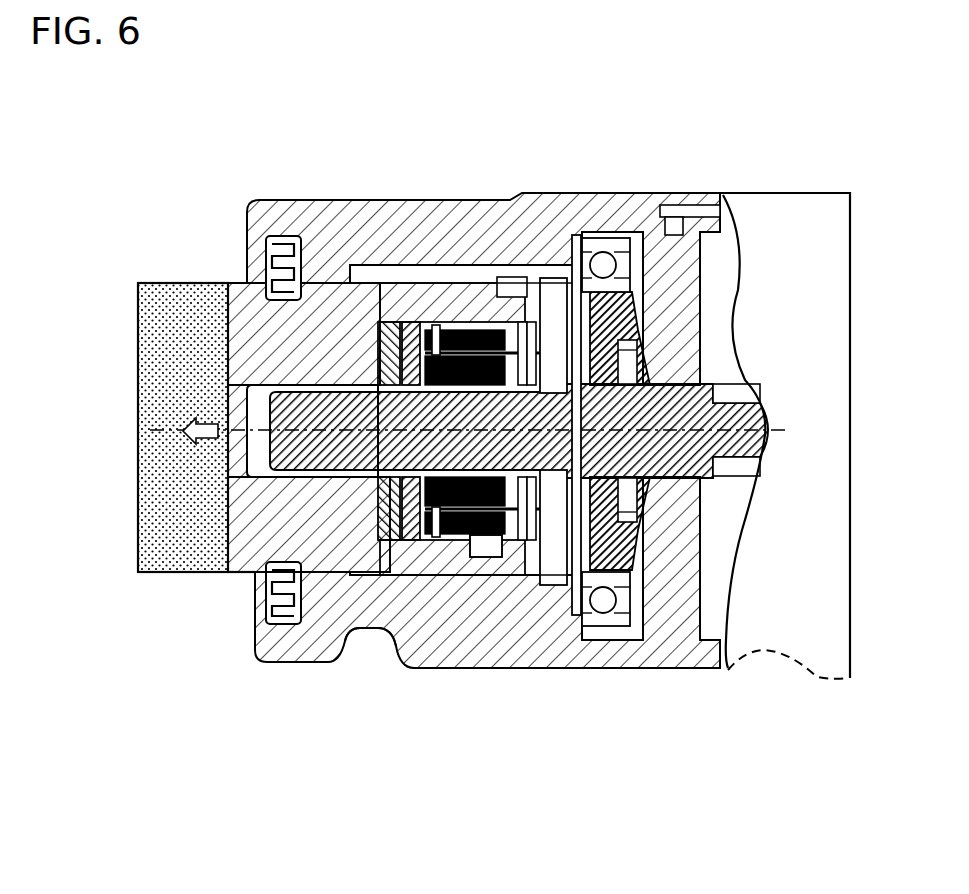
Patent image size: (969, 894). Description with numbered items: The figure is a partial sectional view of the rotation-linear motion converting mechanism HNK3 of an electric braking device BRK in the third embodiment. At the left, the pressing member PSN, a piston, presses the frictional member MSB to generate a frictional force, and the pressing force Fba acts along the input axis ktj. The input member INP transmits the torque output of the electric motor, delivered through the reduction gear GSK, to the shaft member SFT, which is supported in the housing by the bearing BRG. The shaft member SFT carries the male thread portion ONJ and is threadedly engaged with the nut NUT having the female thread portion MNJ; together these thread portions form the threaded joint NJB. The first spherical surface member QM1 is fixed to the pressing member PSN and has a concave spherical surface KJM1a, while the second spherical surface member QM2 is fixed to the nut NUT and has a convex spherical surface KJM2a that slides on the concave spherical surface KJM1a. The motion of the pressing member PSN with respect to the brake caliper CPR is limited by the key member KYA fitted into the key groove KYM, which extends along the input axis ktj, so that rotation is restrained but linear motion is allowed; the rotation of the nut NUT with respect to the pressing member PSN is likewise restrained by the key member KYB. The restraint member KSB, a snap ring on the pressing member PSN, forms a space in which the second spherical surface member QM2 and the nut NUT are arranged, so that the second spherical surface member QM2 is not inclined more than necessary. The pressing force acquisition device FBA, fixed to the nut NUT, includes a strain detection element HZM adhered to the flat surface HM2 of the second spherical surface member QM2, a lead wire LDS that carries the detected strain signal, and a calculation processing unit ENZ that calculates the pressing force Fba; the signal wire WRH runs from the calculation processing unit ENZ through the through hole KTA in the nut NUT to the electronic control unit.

The brake BRK is at (186, 176).
The rotation-linear motion converting mechanism HNK3 is at (456, 140).
The pressing member PSN is at (255, 308).
The frictional member MSB is at (178, 305).
The shaft member SFT is at (333, 405).
The first spherical surface member QM1 is at (390, 330).
The second spherical surface member QM2 is at (416, 328).
The flat surface HM2 is at (412, 320).
The through hole KTA is at (478, 318).
The key member KYA is at (517, 292).
The key member KYB is at (506, 565).
The brake caliper CPR is at (540, 320).
The signal wire WRH is at (572, 300).
The nut assembly NJB is at (862, 133).
The female thread portion MNJ is at (645, 383).
The male thread portion ONJ is at (655, 392).
The input member INP is at (733, 407).
The input axis ktj is at (784, 446).
The pressing force Fba is at (188, 427).
The concave spherical surface KJM1a is at (205, 569).
The convex spherical surface KJM2a is at (240, 570).
The strain detection element HZM is at (300, 624).
The lead wire LDS is at (352, 628).
The pressing force acquisition device FBA is at (403, 650).
The calculation processing unit ENZ is at (405, 565).
The nut NUT is at (476, 548).
The key groove KYM is at (548, 580).
The bearing BRG is at (652, 540).
The restraint member KSB is at (612, 605).
The reduction gear GSK is at (806, 652).